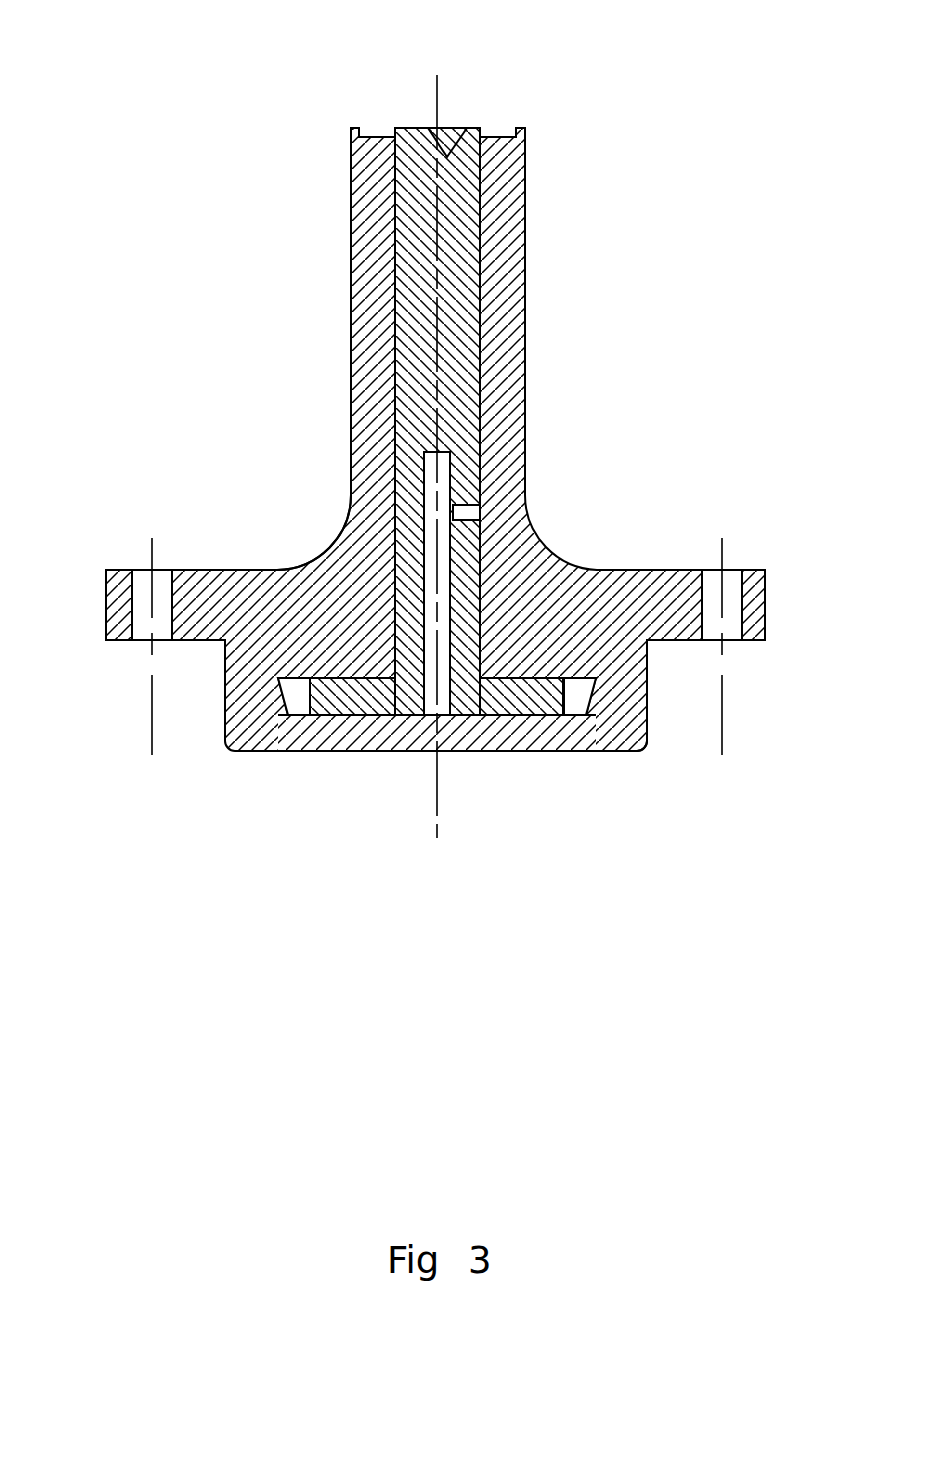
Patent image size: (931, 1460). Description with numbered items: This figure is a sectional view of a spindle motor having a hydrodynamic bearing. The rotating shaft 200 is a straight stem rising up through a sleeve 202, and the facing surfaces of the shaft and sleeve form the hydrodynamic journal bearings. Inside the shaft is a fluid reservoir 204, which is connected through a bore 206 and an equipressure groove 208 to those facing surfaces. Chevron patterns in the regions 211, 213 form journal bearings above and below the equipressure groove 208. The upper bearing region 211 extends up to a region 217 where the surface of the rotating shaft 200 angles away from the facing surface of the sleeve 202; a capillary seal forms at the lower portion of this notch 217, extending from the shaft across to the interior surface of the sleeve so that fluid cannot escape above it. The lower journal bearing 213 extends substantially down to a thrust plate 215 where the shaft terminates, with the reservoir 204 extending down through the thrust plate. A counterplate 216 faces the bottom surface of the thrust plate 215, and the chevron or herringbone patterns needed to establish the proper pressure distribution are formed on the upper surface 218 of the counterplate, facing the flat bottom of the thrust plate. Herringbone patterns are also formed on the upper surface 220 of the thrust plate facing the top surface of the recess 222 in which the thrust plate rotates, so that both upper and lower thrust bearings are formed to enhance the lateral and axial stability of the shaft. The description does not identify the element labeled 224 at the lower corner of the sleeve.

The rotating shaft 200 is at (468, 130).
The sleeve 202 is at (512, 247).
The fluid reservoir 204 is at (440, 457).
The bore 206 is at (470, 507).
The equipressure groove 208 is at (480, 512).
The upper journal bearing region 211 is at (397, 297).
The lower journal bearing region 213 is at (393, 567).
The thrust plate 215 is at (583, 708).
The counterplate 216 is at (522, 748).
The notch region 217 is at (472, 255).
The upper surface of counterplate 218 is at (348, 713).
The upper surface of thrust plate 220 is at (283, 716).
The recess 222 is at (297, 693).
The corner 224 is at (640, 743).